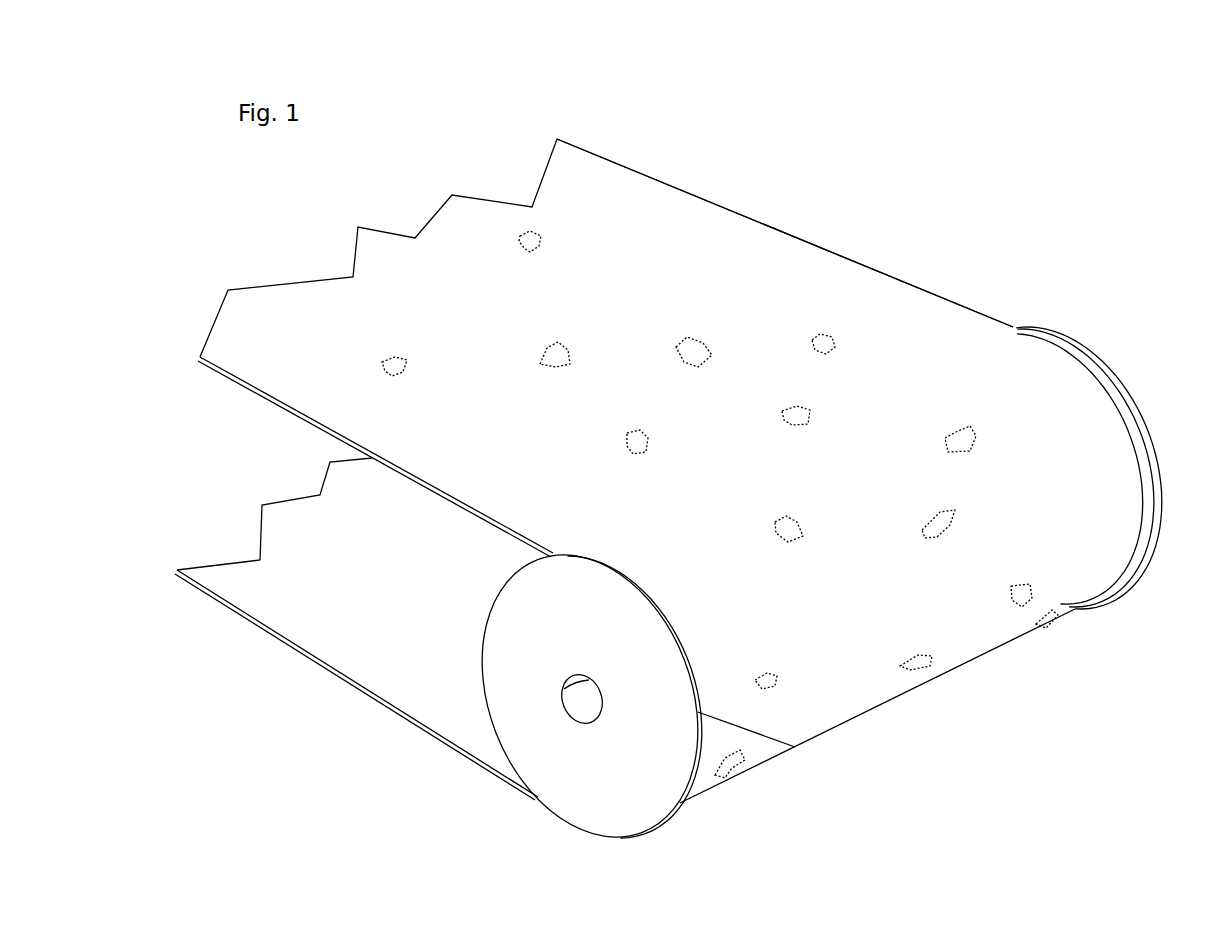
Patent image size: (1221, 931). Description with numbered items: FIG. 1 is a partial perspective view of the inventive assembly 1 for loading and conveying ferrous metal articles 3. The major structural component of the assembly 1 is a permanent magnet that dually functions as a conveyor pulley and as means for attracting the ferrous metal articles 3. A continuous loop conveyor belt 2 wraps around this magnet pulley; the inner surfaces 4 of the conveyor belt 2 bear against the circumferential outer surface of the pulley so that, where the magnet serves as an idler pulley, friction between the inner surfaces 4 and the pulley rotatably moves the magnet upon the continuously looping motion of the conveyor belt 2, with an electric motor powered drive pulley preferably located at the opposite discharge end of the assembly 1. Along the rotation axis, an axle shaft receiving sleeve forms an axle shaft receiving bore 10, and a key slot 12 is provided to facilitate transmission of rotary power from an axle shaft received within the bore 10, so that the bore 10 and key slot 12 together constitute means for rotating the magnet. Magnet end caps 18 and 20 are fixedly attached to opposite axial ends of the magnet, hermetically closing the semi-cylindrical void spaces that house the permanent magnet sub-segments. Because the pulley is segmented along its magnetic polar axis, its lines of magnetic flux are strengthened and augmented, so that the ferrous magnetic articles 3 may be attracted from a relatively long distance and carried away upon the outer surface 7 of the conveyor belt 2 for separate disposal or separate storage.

The assembly for loading and conveying ferrous metal articles 1 is at (888, 213).
The conveyor belt 2 is at (240, 383).
The ferrous metal articles 3 is at (830, 340).
The inner surfaces of the conveyor belt 4 is at (373, 643).
The outer surface of the conveyor belt 7 is at (615, 247).
The axle shaft receiving bore 10 is at (588, 708).
The key slot 12 is at (558, 681).
The magnet end cap 18 is at (795, 747).
The magnet end cap 20 is at (1076, 342).